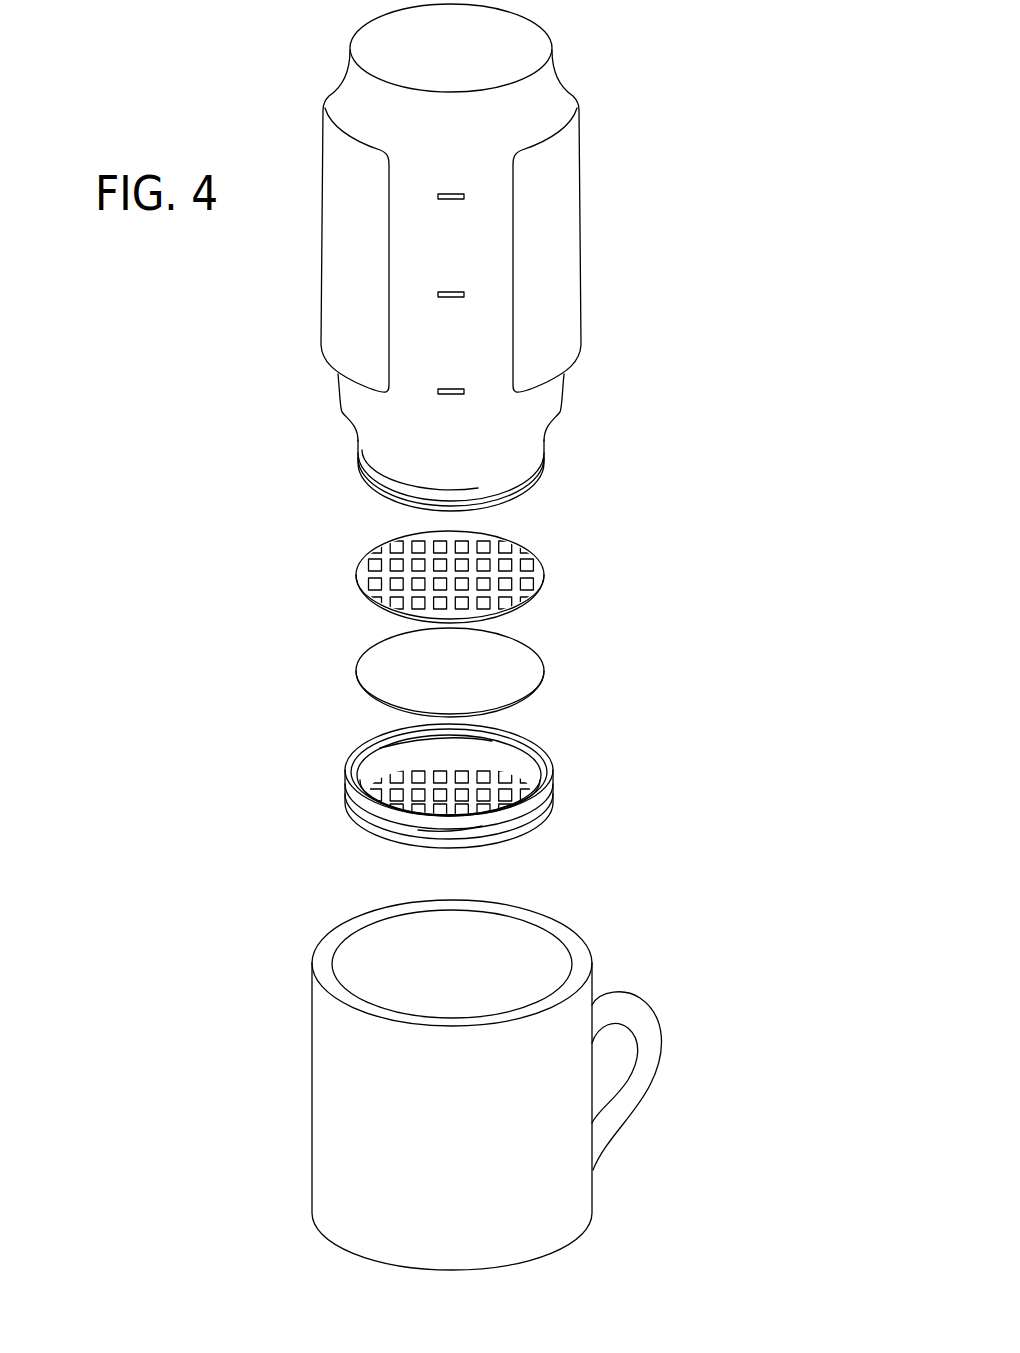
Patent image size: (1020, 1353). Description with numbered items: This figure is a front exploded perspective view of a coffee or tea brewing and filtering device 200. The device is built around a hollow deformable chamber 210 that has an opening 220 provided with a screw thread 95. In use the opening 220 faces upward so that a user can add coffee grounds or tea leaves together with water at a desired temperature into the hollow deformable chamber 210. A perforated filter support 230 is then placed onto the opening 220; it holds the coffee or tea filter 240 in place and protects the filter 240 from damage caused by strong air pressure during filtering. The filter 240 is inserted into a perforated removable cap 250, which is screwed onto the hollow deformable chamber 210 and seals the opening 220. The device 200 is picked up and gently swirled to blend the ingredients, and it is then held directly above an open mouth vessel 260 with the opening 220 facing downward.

The brewing and filtering device 200 is at (772, 185).
The hollow deformable chamber 210 is at (543, 103).
The screw thread 95 is at (546, 463).
The opening 220 is at (388, 499).
The perforated filter support 230 is at (546, 578).
The filter 240 is at (547, 673).
The perforated removable cap 250 is at (548, 797).
The open mouth vessel 260 is at (593, 967).